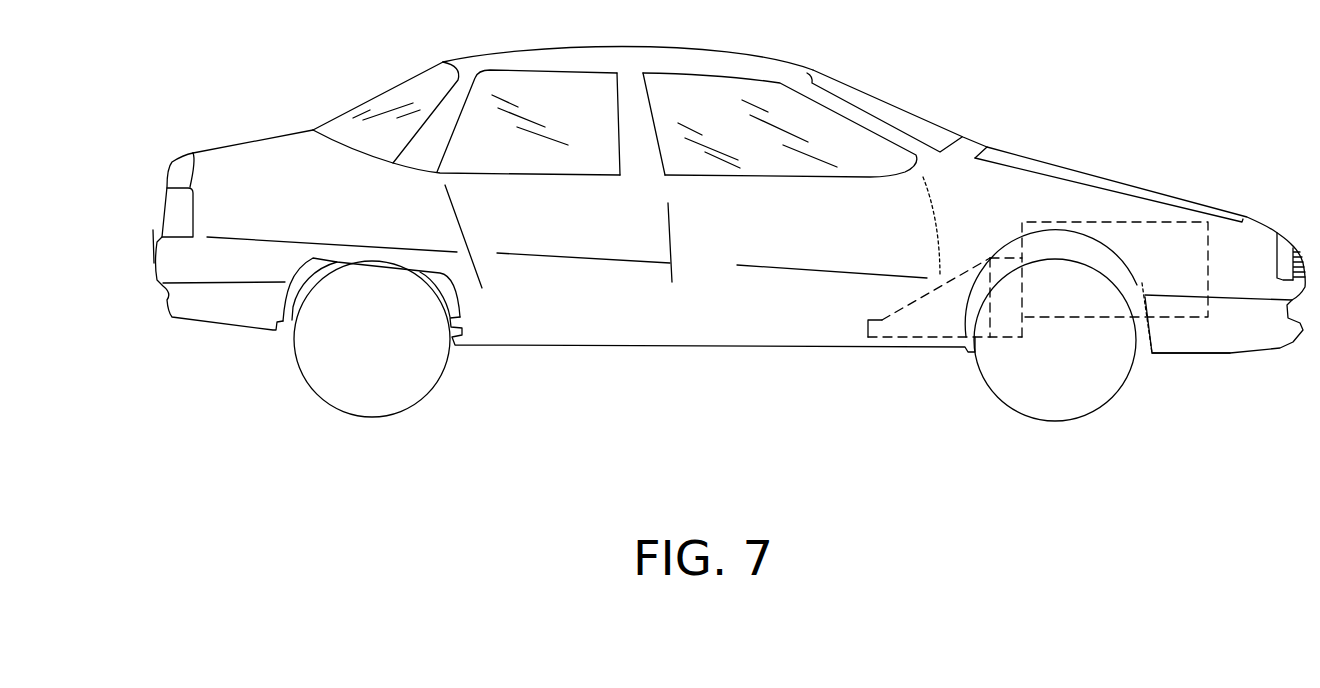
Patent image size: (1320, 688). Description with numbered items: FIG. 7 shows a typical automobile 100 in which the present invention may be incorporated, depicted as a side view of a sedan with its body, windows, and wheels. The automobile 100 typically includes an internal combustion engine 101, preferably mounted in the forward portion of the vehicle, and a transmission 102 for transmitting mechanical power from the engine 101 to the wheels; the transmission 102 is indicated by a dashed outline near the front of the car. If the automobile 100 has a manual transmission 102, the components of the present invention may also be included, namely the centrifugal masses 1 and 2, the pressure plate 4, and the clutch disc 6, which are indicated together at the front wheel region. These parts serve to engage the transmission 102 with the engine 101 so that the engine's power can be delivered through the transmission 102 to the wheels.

The automobile 100 is at (729, 277).
The internal combustion engine 101 is at (1140, 273).
The transmission 102 is at (928, 323).
The centrifugal mass 1 is at (1039, 365).
The centrifugal mass 2 is at (1039, 365).
The pressure plate 4 is at (1039, 365).
The clutch disc 6 is at (1007, 320).